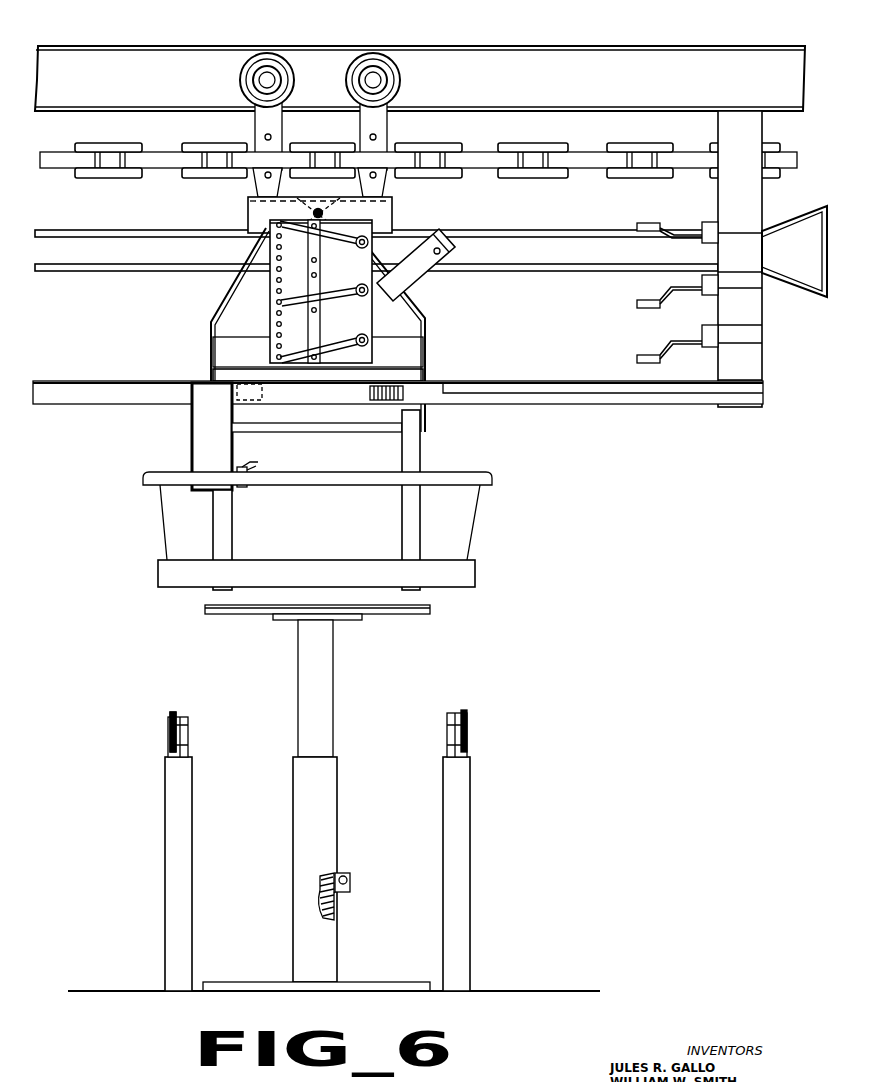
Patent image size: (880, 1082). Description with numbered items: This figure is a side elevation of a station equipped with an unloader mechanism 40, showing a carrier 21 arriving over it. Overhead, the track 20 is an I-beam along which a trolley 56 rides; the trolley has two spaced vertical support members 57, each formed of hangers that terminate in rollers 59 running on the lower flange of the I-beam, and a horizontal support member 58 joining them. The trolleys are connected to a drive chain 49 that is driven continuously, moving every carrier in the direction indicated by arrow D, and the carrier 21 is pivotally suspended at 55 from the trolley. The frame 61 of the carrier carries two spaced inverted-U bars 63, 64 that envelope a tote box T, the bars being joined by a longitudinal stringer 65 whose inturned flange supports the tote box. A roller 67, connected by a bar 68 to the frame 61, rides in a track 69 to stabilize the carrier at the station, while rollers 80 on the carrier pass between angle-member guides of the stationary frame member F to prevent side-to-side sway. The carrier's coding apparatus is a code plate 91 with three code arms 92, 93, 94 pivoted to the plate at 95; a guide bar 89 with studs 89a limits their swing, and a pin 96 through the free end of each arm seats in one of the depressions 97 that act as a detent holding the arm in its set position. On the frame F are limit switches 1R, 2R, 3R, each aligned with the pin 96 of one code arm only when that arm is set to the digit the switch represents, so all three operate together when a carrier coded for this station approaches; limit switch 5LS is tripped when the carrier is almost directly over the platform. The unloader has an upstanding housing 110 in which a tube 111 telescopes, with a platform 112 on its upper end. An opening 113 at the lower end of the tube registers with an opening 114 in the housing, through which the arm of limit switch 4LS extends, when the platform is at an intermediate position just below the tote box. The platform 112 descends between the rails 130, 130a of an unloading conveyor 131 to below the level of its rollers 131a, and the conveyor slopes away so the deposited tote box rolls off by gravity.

The track 20 is at (513, 47).
The carrier 21 is at (452, 313).
The unloader mechanism 40 is at (334, 798).
The drive chain 49 is at (608, 157).
The pivotal suspension 55 is at (332, 202).
The trolley 56 is at (405, 105).
The vertical support member 57 is at (374, 100).
The horizontal support member 58 is at (390, 213).
The rollers 59 is at (358, 57).
The frame 61 is at (420, 343).
The bar 63 is at (420, 448).
The bar 64 is at (228, 522).
The longitudinal stringer 65 is at (468, 570).
The roller 67 is at (458, 235).
The bar 68 is at (453, 256).
The track 69 is at (597, 260).
The rollers 80 is at (370, 397).
The guide bar 89 is at (348, 282).
The studs 89a is at (290, 258).
The code plate 91 is at (275, 237).
The code arm 92 is at (290, 212).
The code arm 93 is at (273, 278).
The code arm 94 is at (362, 350).
The pivotal connection 95 is at (361, 336).
The pin 96 is at (277, 223).
The depressions 97 is at (272, 350).
The limit switch 1R is at (752, 218).
The limit switch 2R is at (752, 270).
The limit switch 3R is at (752, 322).
The frame member F is at (80, 390).
The tote box T is at (470, 515).
The direction of carrier travel D is at (692, 478).
The limit switch 5LS is at (245, 485).
The limit switch 4LS is at (338, 878).
The housing 110 is at (330, 765).
The tube 111 is at (330, 707).
The platform 112 is at (402, 613).
The opening 113 is at (325, 908).
The opening 114 is at (343, 893).
The rail 130 is at (163, 743).
The rail 130a is at (473, 748).
The unloading conveyor 131 is at (160, 884).
The rollers 131a is at (167, 716).